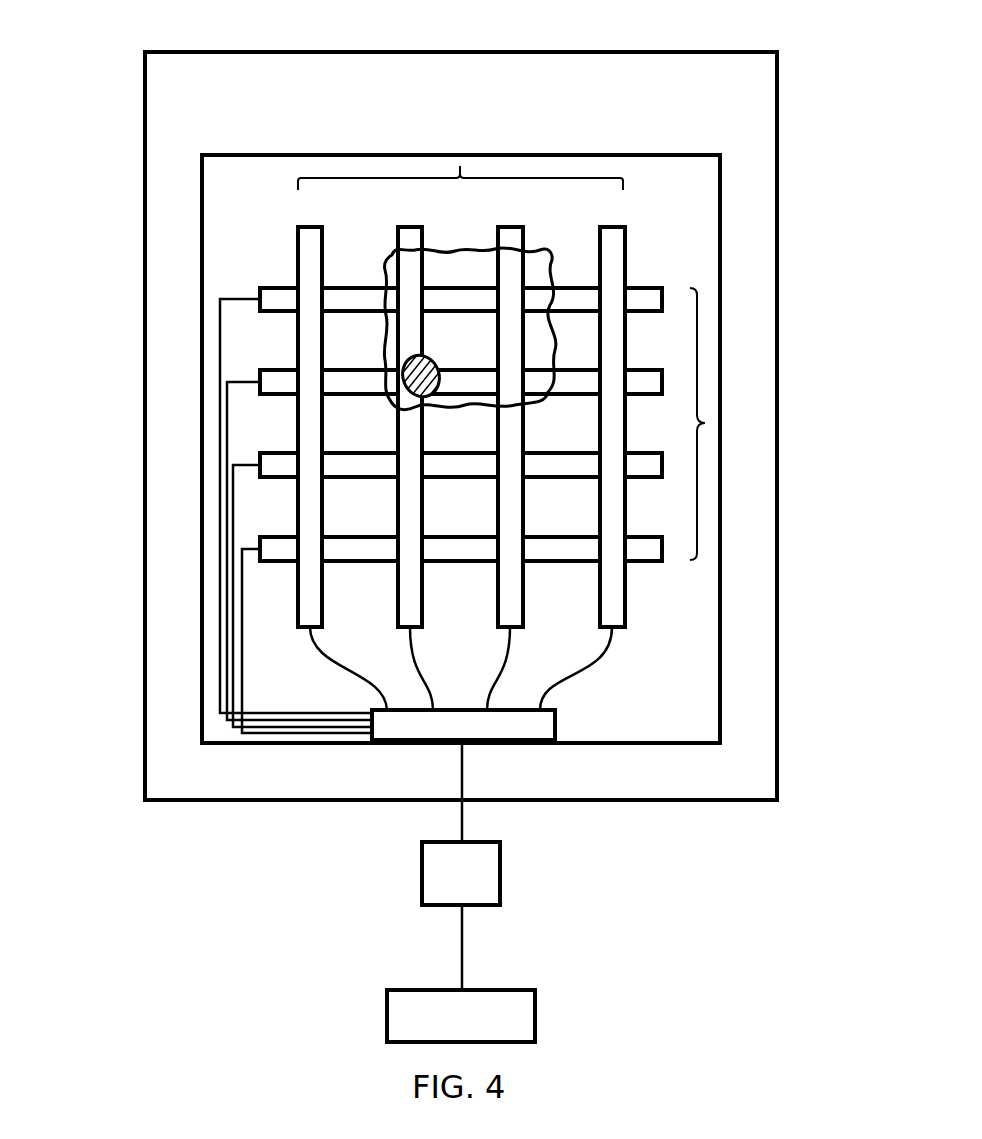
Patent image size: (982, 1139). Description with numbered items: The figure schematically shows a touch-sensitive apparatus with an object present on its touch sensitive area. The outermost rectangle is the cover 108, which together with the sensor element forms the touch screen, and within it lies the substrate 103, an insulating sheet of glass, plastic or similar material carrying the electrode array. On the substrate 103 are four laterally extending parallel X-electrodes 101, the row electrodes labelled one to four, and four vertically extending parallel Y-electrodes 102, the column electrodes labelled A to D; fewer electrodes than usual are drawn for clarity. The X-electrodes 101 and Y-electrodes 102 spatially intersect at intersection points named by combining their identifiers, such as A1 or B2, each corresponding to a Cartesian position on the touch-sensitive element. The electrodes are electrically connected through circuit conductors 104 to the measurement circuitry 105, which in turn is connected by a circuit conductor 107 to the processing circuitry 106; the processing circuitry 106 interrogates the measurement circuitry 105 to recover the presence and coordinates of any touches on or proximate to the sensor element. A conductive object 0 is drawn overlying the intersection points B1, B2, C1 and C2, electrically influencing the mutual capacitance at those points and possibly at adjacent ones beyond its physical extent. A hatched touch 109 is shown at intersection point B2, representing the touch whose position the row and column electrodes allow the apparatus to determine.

The conductive object 0 is at (378, 340).
The X-electrodes 101 is at (705, 423).
The Y-electrodes 102 is at (460, 166).
The substrate 103 is at (720, 205).
The circuit conductors 104 is at (460, 762).
The measurement circuitry 105 is at (422, 870).
The processing circuitry 106 is at (387, 1012).
The circuit conductor 107 is at (462, 963).
The cover 108 is at (777, 84).
The touch 109 is at (403, 393).